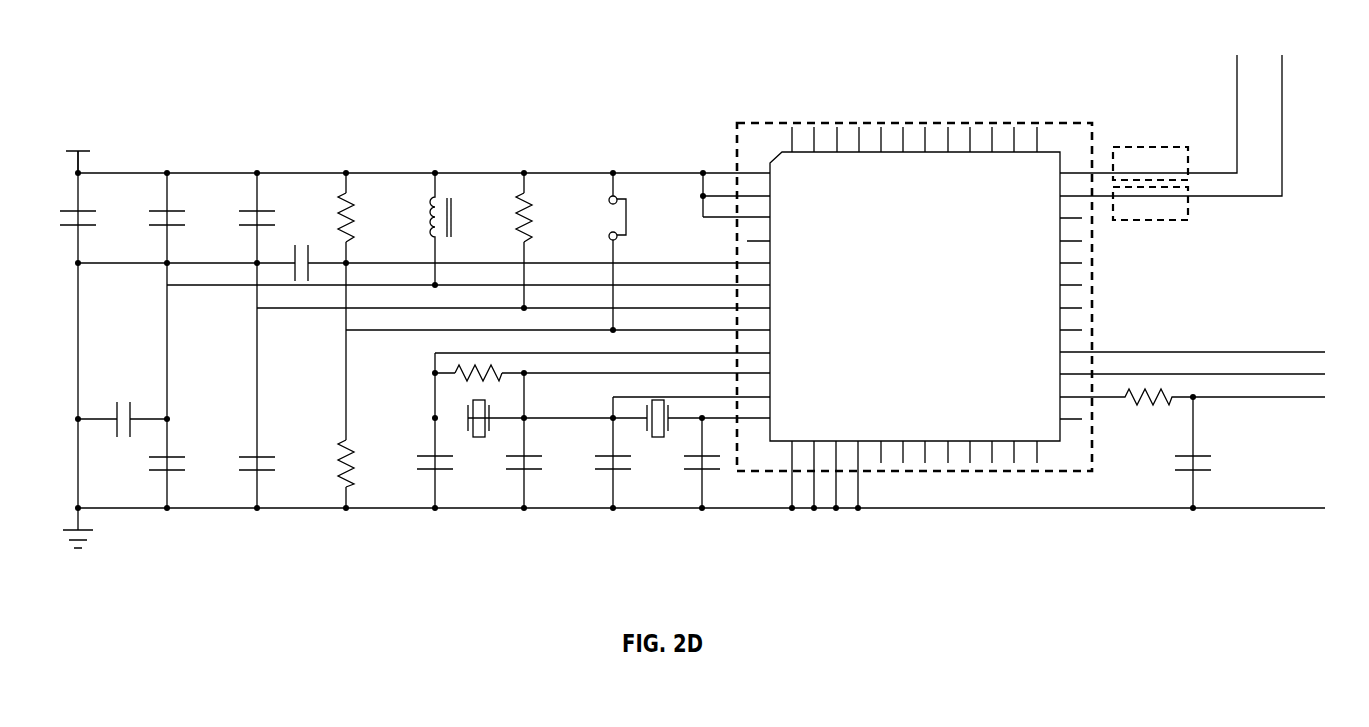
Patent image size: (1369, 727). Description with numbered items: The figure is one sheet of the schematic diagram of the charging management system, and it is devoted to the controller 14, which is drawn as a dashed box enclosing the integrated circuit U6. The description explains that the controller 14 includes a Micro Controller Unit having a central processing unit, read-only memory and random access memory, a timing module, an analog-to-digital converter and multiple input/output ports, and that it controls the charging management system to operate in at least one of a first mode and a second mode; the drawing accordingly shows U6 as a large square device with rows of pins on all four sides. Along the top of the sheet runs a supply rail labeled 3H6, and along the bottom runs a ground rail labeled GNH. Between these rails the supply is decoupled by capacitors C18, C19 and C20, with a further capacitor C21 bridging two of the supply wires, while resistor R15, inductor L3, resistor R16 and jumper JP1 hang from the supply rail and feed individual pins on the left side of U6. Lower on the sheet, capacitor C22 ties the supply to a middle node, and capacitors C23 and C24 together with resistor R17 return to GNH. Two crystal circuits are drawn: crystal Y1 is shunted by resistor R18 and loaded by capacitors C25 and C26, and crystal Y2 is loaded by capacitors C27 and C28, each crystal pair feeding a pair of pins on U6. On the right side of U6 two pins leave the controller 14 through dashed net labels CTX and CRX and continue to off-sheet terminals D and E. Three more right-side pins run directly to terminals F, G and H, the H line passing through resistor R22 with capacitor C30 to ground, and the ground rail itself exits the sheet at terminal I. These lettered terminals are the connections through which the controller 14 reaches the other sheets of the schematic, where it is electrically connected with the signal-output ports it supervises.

The controller 14 is at (872, 120).
The microcontroller U6 is at (926, 317).
The capacitor C18 is at (96, 214).
The capacitor C19 is at (185, 214).
The capacitor C20 is at (277, 214).
The capacitor C21 is at (285, 263).
The capacitor C22 is at (122, 408).
The capacitor C23 is at (188, 458).
The capacitor C24 is at (278, 458).
The capacitor C25 is at (456, 458).
The capacitor C26 is at (545, 458).
The capacitor C27 is at (635, 458).
The capacitor C28 is at (689, 476).
The capacitor C30 is at (1214, 452).
The resistor R15 is at (368, 217).
The resistor R16 is at (548, 217).
The resistor R17 is at (371, 463).
The resistor R18 is at (490, 365).
The resistor R22 is at (1192, 410).
The inductor L3 is at (456, 217).
The jumper JP1 is at (635, 218).
The crystal oscillator Y1 is at (466, 418).
The crystal oscillator Y2 is at (640, 407).
The transmit signal net CTX is at (1150, 163).
The receive signal net CRX is at (1150, 203).
The terminal D is at (1154, 98).
The terminal E is at (1175, 110).
The terminal F is at (1205, 344).
The terminal G is at (1208, 371).
The terminal H is at (1344, 397).
The terminal I is at (1339, 507).
The power supply net 3H6 is at (84, 151).
The ground net GNH is at (101, 530).